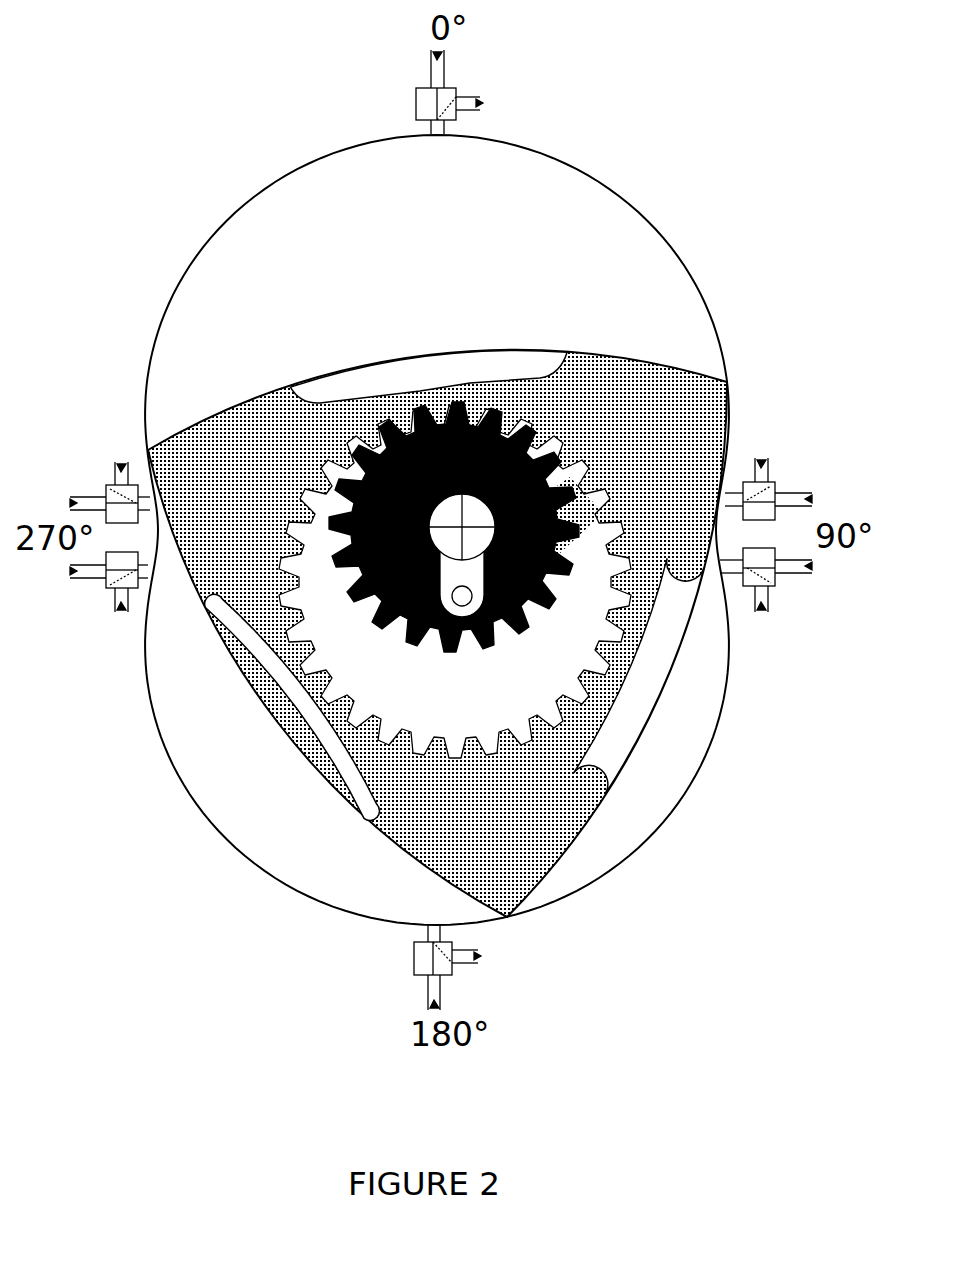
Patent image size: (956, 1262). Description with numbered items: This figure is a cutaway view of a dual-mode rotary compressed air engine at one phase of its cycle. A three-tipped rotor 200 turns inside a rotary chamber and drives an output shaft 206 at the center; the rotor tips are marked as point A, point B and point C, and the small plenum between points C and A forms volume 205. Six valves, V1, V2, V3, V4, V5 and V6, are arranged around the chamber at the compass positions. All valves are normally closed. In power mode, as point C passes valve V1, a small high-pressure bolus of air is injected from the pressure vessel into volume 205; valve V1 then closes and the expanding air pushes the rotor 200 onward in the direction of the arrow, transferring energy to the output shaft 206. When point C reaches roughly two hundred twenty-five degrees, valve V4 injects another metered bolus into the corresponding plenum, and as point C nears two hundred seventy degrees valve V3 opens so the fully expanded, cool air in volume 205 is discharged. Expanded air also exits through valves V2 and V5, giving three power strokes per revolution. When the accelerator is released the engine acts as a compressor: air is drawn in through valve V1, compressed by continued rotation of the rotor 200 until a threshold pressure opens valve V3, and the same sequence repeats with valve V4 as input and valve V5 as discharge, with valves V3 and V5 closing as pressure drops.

The rotor 200 is at (437, 633).
The volume 205 is at (705, 660).
The output shaft 206 is at (462, 555).
The valve V1 is at (770, 582).
The valve V2 is at (452, 968).
The valve V3 is at (109, 587).
The valve V4 is at (110, 492).
The valve V5 is at (456, 92).
The valve V6 is at (773, 489).
The point A is at (447, 858).
The point B is at (174, 465).
The point C is at (708, 395).